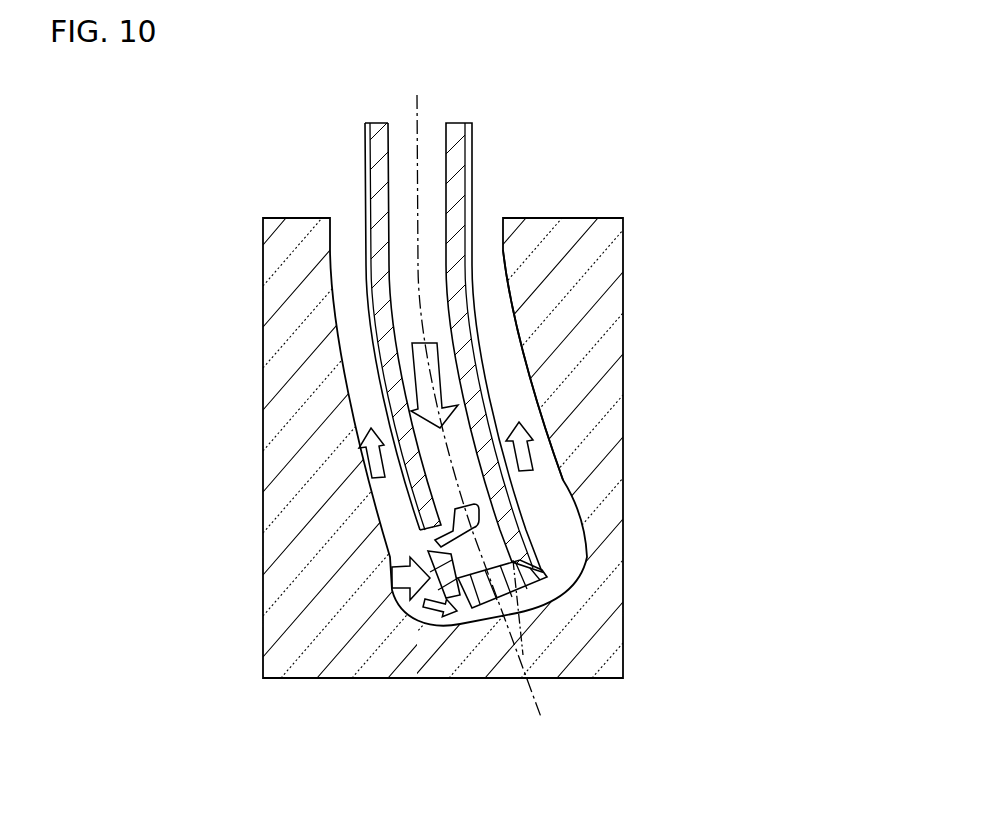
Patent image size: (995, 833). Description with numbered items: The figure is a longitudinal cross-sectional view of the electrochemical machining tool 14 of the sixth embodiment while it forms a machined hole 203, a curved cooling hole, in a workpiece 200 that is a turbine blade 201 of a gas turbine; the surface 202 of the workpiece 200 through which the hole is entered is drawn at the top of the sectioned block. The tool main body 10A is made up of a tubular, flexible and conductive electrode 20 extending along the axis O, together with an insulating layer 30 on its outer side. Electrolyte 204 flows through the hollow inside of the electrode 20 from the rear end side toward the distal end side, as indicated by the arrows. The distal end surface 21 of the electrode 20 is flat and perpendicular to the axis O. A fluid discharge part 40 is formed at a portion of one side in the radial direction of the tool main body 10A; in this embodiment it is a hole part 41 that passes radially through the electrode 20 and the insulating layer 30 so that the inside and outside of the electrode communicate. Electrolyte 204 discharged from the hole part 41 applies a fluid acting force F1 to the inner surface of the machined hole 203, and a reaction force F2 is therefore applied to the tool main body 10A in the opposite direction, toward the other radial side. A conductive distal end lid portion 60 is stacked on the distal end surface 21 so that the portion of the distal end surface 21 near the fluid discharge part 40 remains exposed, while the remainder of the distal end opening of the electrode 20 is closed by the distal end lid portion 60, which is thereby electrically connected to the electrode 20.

The electrochemical machining tool 14 is at (420, 362).
The tool main body 10A is at (483, 177).
The electrode 20 is at (368, 147).
The insulating layer 30 is at (367, 187).
The workpiece 200 is at (520, 448).
The turbine blade 201 is at (597, 372).
The upper surface 202 is at (567, 219).
The machined hole 203 is at (503, 282).
The electrolyte 204 is at (470, 485).
The axis O is at (418, 292).
The fluid discharge part 40 is at (312, 643).
The hole part 41 is at (427, 543).
The distal end surface 21 is at (461, 597).
The distal end lid portion 60 is at (505, 592).
The fluid acting force F1 is at (443, 603).
The reaction force F2 is at (419, 546).